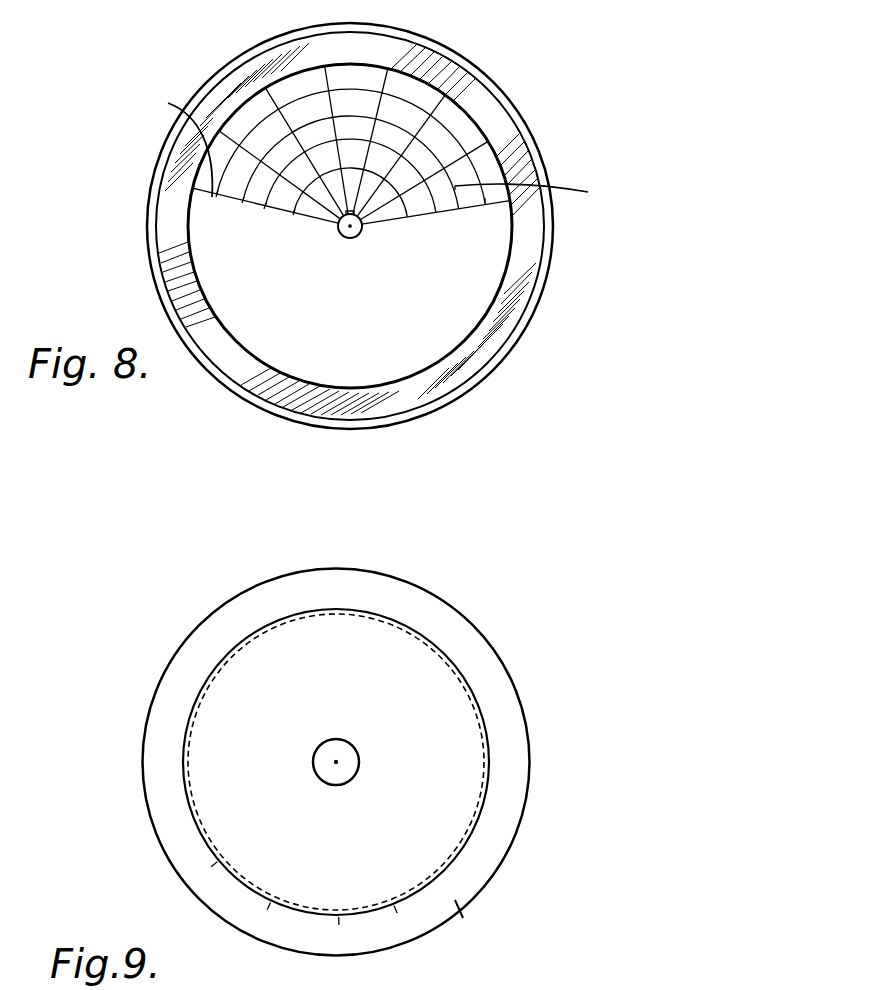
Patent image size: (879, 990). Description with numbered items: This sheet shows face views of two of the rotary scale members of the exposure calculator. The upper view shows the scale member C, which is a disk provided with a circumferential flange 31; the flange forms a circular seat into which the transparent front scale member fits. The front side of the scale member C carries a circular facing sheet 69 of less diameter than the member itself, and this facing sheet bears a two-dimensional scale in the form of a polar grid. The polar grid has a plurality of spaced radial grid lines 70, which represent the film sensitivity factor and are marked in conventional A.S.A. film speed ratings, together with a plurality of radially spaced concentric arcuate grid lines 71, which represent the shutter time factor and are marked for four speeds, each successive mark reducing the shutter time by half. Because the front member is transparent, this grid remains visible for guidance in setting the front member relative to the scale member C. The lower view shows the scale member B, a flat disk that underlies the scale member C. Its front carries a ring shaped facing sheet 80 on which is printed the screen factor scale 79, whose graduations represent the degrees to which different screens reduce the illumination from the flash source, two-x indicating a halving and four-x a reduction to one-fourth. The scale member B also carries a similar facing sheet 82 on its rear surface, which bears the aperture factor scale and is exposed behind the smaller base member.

In FIG. 8, the circumferential flange 31 is at (497, 92).
In FIG. 8, the scale member C is at (540, 150).
In FIG. 8, the circular facing sheet 69 is at (452, 340).
In FIG. 8, the radial grid lines 70 is at (262, 103).
In FIG. 8, the concentric grid lines 71 is at (485, 198).
In FIG. 9, the scale member B is at (478, 621).
In FIG. 9, the facing sheet 82 is at (482, 716).
In FIG. 9, the screen factor scale 79 is at (308, 938).
In FIG. 9, the ring shaped facing sheet 80 is at (470, 916).